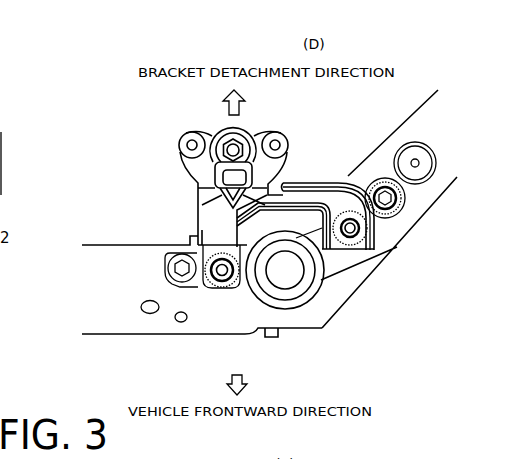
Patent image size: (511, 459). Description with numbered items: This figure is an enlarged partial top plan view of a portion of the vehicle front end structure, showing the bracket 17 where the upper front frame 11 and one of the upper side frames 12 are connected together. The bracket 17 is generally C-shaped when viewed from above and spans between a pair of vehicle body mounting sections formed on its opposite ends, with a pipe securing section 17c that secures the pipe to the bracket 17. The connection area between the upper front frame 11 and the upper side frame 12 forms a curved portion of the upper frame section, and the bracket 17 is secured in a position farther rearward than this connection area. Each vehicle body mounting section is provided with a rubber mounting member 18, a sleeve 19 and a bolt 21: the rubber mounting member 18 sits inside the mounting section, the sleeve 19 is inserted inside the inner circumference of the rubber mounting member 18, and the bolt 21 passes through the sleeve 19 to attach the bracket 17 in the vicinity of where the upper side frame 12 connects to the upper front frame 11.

The upper front frame 11 is at (115, 333).
The upper side frame 12 is at (430, 204).
The bracket 17 is at (322, 176).
The pipe securing section 17c is at (270, 131).
The rubber mounting member 18 is at (221, 283).
The sleeve 19 is at (228, 284).
The bolt 21 is at (216, 283).